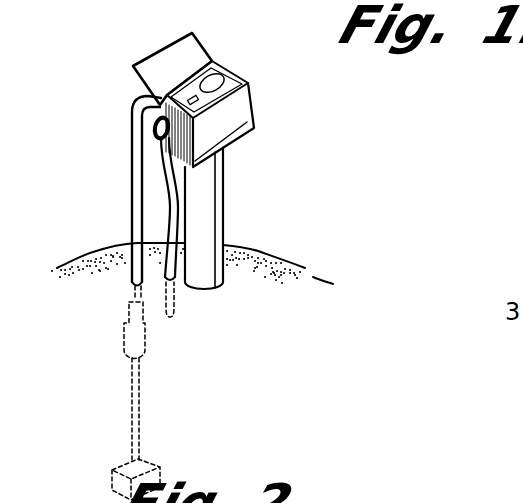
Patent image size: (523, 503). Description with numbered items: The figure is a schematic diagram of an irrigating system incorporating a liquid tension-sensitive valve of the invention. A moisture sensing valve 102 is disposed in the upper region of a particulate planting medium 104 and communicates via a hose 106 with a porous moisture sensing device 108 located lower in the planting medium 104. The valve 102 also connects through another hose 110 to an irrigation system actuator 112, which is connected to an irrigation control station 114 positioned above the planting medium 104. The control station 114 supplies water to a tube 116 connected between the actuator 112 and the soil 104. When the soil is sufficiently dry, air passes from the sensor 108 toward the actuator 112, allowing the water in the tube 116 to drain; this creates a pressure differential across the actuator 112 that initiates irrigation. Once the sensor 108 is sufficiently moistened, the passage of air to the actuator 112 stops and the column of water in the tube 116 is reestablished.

The moisture sensing valve 102 is at (147, 339).
The particulate planting medium 104 is at (292, 279).
The hose 106 is at (142, 428).
The porous moisture sensing device 108 is at (152, 467).
The hose 110 is at (132, 180).
The irrigation system actuator 112 is at (173, 127).
The irrigation control station 114 is at (257, 101).
The tube 116 is at (165, 221).